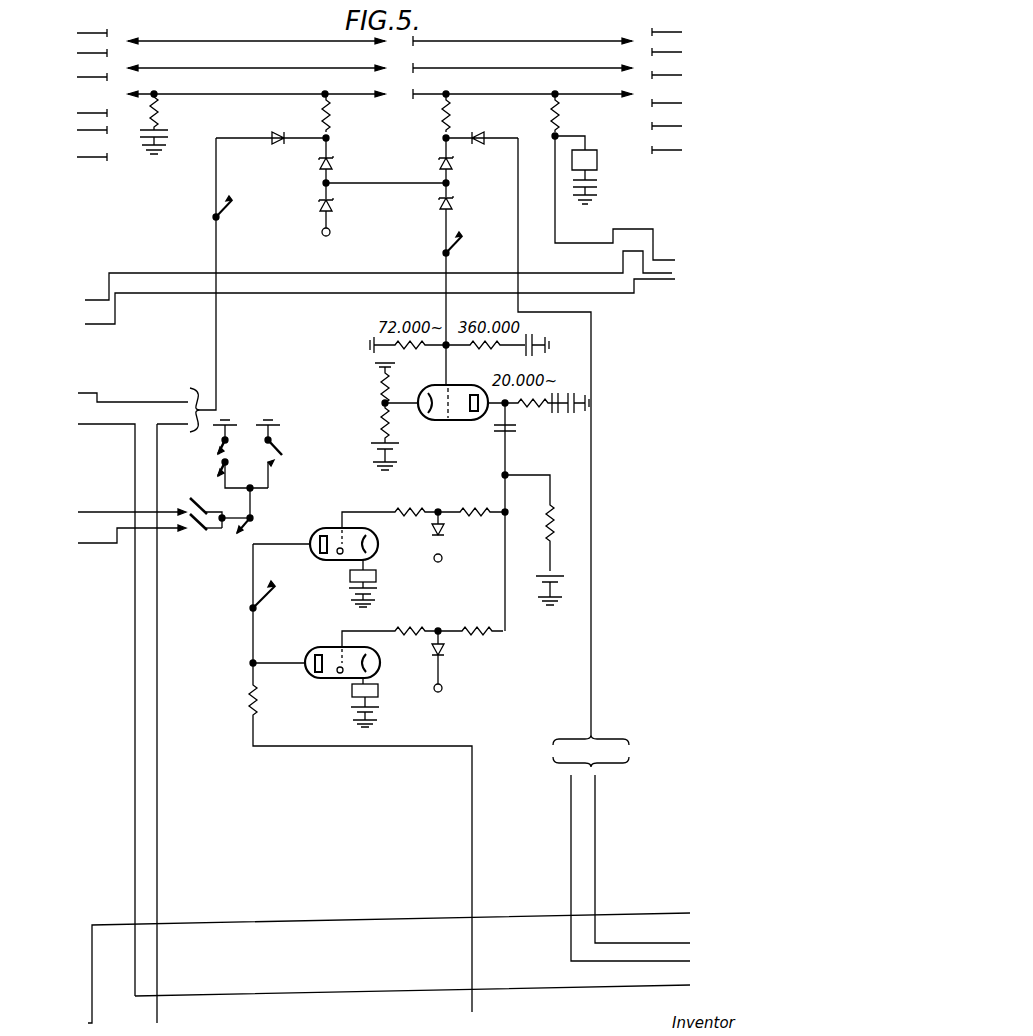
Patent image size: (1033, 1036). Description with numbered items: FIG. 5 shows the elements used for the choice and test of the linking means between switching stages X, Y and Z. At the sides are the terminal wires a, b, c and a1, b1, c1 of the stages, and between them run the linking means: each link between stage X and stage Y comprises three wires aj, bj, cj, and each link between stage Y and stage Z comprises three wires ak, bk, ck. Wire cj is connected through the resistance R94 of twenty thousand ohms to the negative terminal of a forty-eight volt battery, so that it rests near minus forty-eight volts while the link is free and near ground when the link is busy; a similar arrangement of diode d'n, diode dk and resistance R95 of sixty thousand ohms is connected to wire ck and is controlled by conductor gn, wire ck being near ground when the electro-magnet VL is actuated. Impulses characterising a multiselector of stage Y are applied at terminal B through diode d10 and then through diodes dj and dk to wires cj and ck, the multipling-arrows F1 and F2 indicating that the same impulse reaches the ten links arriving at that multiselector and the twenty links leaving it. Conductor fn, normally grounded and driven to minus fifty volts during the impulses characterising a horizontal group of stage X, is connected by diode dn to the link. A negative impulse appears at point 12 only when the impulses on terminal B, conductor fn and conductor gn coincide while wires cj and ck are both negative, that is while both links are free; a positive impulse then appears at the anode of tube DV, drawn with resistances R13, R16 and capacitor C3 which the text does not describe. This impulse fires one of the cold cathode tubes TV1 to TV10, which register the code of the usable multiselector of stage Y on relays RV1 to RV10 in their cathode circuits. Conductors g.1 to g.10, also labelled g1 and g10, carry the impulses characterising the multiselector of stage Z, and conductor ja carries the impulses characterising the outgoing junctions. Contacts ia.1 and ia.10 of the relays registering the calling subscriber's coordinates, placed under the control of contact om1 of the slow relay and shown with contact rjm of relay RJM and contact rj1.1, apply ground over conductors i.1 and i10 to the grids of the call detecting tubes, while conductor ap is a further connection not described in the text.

The wire a is at (379, 25).
The wire b is at (379, 46).
The wire c is at (379, 69).
The wire a' a1 is at (379, 101).
The wire b' b1 is at (379, 121).
The wire c' c1 is at (379, 146).
The stage X is at (121, 20).
The stage Y is at (403, 67).
The stage Z is at (617, 20).
The wire a'j aj is at (256, 33).
The wire b'j bj is at (256, 60).
The wire c'j cj is at (256, 86).
The wire a'k ak is at (522, 33).
The wire b'k bk is at (522, 60).
The wire c'k ck is at (522, 86).
The resistance R94 is at (172, 124).
The resistance R95 is at (428, 114).
The electro-magnet VL is at (574, 149).
The diode dn is at (272, 127).
The diode d'n is at (480, 127).
The diode dj is at (335, 160).
The diode dk is at (434, 160).
The multipling-arrow F.1 F1 is at (318, 179).
The multipling-arrow F.2 F2 is at (450, 181).
The diode d.10 d10 is at (343, 205).
The point 12 is at (455, 218).
The terminal B is at (325, 241).
The conductor g.n gn is at (570, 436).
The tube DV is at (453, 414).
The resistor R13 is at (370, 384).
The resistor R16 is at (372, 436).
The capacitor C3 is at (517, 437).
The cold cathode tube TV.1 TV1 is at (380, 539).
The cold cathode tube TV.10 TV10 is at (376, 659).
The relay RV.1 RV1 is at (381, 588).
The relay RV.10 RV10 is at (388, 705).
The conductor g.1 is at (615, 848).
The conductor g.10 is at (642, 858).
The conductor j.a ja is at (384, 685).
The conductor fn is at (133, 713).
The relay contact rj1.1 is at (210, 440).
The contact om"1 om1 is at (218, 473).
The contact rjm.1 rjm is at (282, 454).
The conductor i.1 is at (132, 503).
The conductor i.10 i10 is at (132, 533).
The contact ia.1 is at (191, 509).
The contact ia.10 is at (196, 534).
The conductor ap is at (389, 954).
The conductor g.1 g1 is at (661, 933).
The conductor g.10 g10 is at (664, 952).